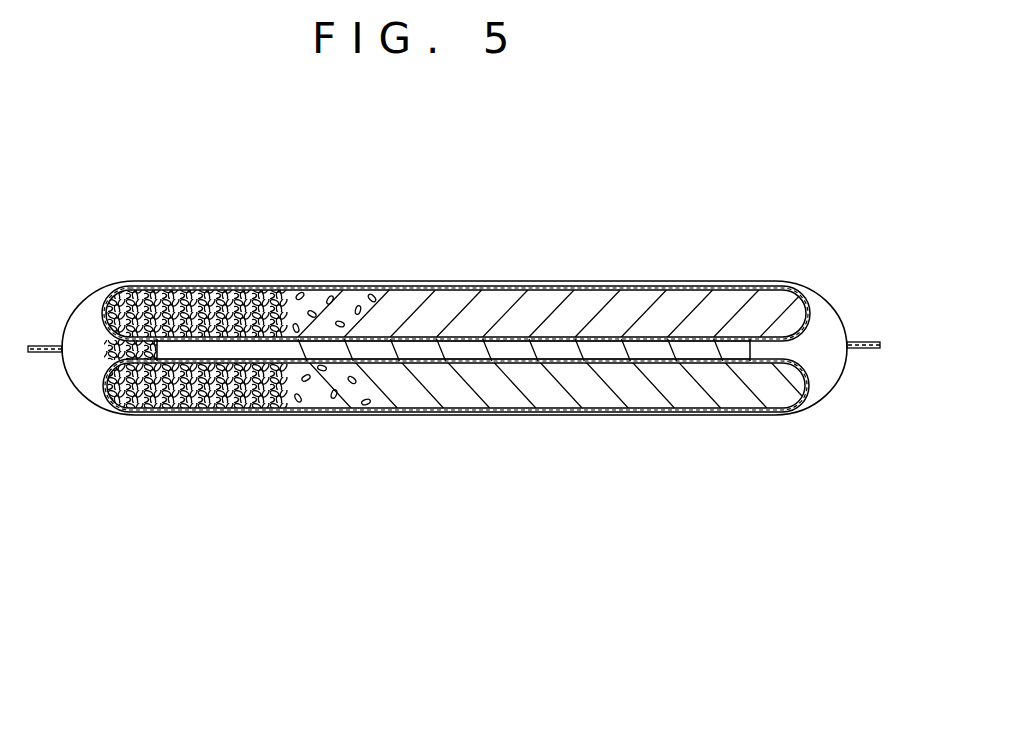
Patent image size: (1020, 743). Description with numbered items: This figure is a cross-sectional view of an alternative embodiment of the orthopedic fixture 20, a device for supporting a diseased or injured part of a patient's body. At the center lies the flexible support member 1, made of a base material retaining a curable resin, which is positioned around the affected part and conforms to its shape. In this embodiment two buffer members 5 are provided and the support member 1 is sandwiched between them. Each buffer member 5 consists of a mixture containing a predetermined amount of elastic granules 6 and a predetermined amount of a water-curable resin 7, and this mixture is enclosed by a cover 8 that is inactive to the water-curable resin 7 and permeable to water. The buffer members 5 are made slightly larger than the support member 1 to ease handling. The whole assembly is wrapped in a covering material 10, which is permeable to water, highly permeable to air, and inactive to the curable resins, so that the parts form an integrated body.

The orthopedic fixture 20 is at (574, 160).
The support member 1 is at (330, 350).
The buffer member 5 is at (481, 313).
The elastic granules 6 is at (236, 300).
The water-curable resin 7 is at (150, 300).
The cover 8 is at (803, 305).
The covering material 10 is at (837, 318).